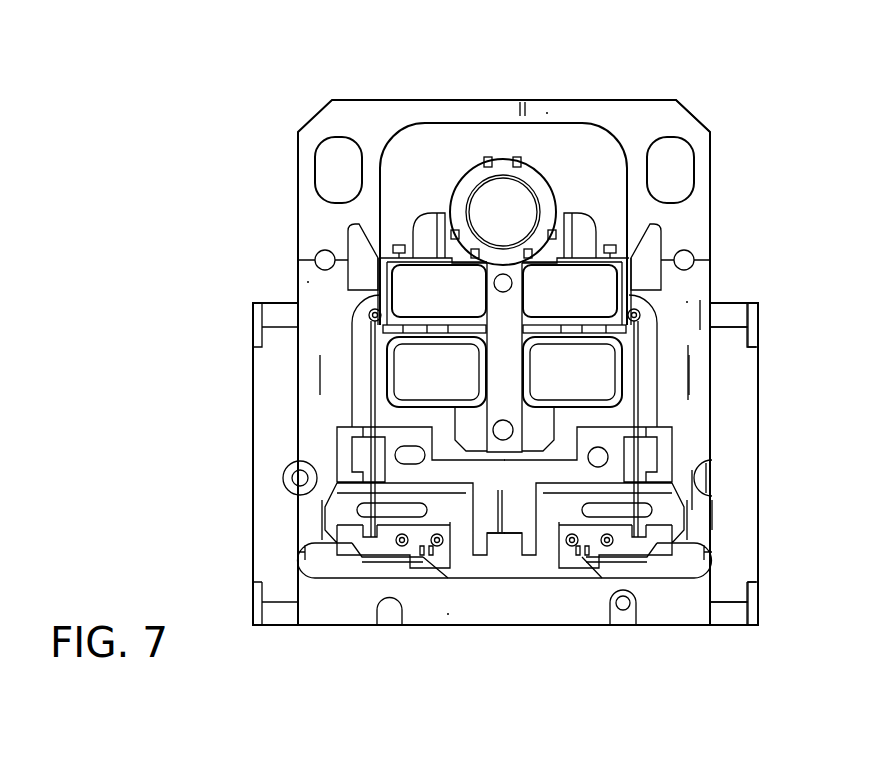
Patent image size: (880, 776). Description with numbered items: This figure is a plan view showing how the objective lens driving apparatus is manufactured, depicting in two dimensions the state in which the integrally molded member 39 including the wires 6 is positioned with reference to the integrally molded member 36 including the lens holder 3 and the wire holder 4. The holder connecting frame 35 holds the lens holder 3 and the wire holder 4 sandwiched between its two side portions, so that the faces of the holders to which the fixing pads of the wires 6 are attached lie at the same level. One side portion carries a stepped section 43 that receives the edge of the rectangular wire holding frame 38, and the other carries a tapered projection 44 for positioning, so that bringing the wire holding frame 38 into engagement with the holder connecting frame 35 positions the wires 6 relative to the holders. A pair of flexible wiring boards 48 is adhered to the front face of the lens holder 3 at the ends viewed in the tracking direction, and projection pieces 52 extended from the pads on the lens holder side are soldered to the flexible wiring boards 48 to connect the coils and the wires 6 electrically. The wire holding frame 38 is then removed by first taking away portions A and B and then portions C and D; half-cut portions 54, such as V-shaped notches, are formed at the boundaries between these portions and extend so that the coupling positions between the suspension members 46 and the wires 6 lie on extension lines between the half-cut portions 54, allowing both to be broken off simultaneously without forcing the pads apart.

The lens holder 3 is at (568, 200).
The wire holder 4 is at (505, 542).
The wires 6 is at (370, 365).
The holder connecting frame 35 is at (748, 484).
The integrally molded member 36 is at (768, 416).
The wire holding frame 38 is at (305, 220).
The integrally molded member 39 is at (655, 97).
The stepped section 43 is at (708, 430).
The projection 44 is at (283, 480).
The suspension members 46 is at (373, 237).
The flexible wiring boards 48 is at (425, 260).
The projection pieces 52 is at (398, 244).
The half-cut portions 54 is at (310, 257).
The portion A is at (546, 113).
The portion B is at (447, 614).
The portion C is at (307, 282).
The portion D is at (686, 302).